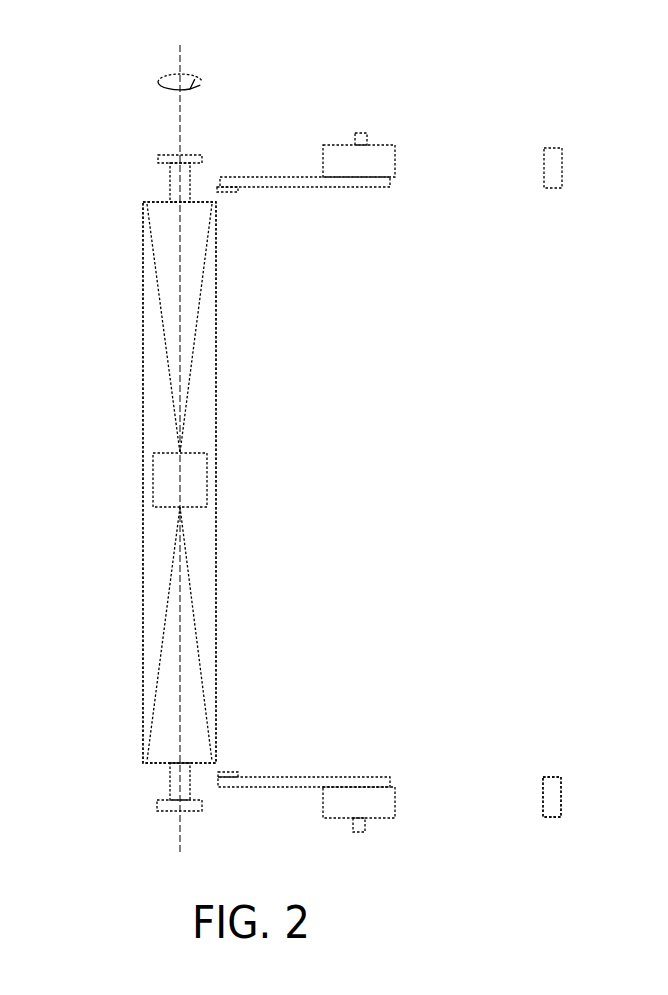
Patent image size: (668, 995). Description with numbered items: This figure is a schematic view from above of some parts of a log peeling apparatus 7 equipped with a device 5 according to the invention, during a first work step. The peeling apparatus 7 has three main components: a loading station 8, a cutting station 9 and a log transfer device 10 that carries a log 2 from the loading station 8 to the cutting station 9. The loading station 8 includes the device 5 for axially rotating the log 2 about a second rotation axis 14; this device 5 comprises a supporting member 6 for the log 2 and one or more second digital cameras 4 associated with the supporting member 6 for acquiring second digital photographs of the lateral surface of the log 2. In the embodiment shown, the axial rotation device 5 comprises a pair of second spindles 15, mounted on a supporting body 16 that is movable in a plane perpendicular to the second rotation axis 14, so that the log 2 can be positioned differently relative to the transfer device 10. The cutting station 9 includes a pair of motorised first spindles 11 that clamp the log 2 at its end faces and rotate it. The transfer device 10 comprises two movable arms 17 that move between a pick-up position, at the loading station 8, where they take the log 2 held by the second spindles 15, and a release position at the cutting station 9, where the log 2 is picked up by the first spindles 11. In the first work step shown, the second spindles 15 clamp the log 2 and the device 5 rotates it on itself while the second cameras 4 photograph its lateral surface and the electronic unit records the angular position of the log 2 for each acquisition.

The log 2 is at (252, 562).
The second digital camera 4 is at (180, 465).
The device 5 is at (136, 808).
The supporting member 6 is at (163, 845).
The log peeling apparatus 7 is at (515, 843).
The loading station 8 is at (253, 365).
The cutting station 9 is at (583, 795).
The log transfer device 10 is at (355, 843).
The first spindles 11 is at (555, 172).
The second rotation axis 14 is at (180, 95).
The second spindles 15 is at (178, 186).
The supporting body 16 is at (187, 160).
The movable arms 17 is at (323, 187).